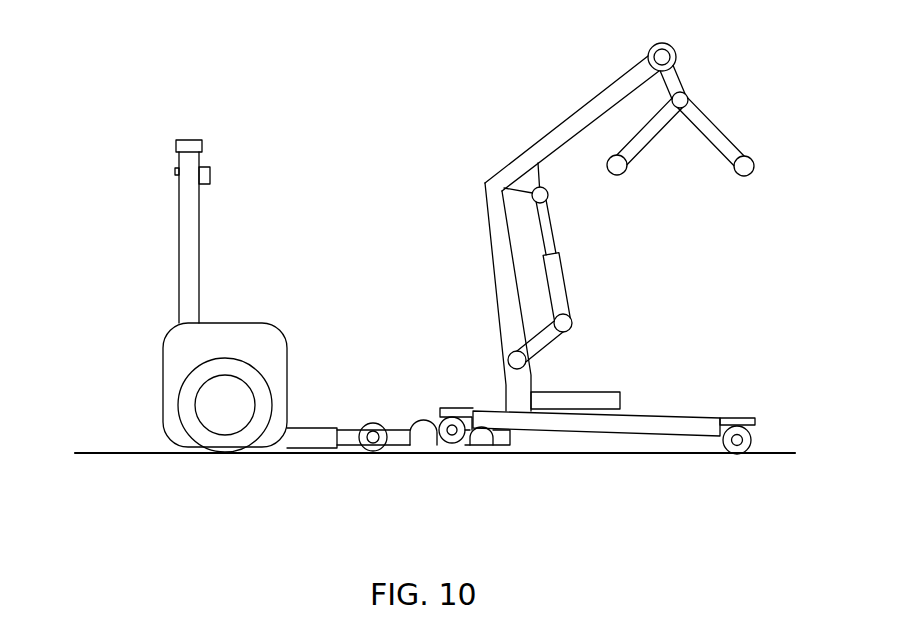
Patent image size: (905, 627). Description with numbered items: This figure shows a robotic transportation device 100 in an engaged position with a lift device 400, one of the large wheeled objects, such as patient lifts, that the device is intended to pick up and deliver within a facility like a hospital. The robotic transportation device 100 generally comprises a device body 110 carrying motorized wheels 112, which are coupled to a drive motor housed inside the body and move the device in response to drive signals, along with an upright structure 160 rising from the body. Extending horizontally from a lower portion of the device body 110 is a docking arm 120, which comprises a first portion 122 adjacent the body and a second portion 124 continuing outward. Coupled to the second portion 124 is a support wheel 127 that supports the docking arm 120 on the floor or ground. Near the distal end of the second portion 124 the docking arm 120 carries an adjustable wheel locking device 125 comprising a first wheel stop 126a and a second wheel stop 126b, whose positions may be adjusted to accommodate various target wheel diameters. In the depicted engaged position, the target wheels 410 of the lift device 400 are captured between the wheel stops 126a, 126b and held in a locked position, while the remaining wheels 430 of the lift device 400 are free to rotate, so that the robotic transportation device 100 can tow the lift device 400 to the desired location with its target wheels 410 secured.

The robotic transportation device 100 is at (138, 250).
The device body 110 is at (163, 372).
The motorized wheels 112 is at (224, 455).
The docking arm 120 is at (360, 363).
The first portion 122 is at (312, 427).
The second portion 124 is at (352, 429).
The adjustable wheel locking device 125 is at (455, 473).
The first wheel stop 126a is at (483, 450).
The second wheel stop 126b is at (424, 450).
The support wheel 127 is at (371, 452).
The mast / sensor post 160 is at (205, 143).
The lift device 400 is at (732, 110).
The target wheels 410 is at (450, 413).
The remaining wheels 430 is at (738, 454).